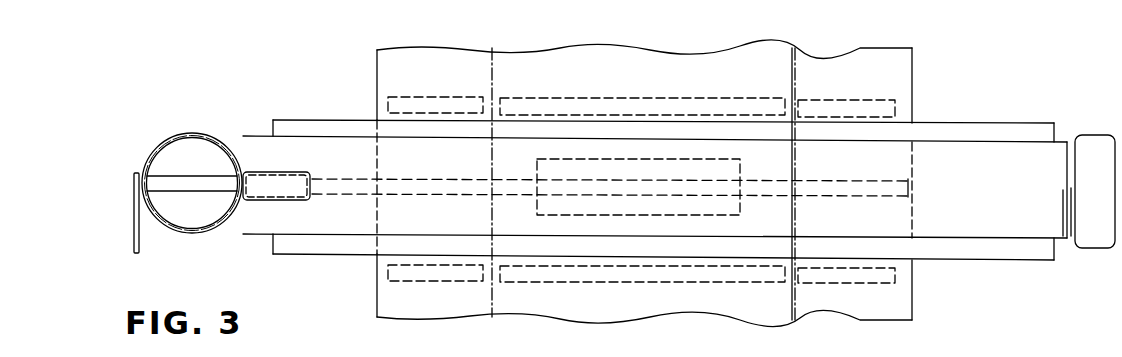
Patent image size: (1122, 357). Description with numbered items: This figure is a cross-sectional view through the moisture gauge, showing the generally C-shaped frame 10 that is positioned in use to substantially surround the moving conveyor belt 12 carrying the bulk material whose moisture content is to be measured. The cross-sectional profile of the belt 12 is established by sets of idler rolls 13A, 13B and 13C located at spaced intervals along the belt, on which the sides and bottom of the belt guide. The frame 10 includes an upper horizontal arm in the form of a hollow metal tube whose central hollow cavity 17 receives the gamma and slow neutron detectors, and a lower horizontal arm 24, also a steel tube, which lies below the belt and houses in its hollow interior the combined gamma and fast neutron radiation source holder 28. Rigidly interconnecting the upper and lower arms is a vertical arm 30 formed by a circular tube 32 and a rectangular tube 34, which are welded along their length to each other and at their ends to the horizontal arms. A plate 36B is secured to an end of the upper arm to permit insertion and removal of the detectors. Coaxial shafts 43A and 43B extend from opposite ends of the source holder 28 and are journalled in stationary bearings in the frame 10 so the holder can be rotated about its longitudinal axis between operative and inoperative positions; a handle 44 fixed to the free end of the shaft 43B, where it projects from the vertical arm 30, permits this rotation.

The C-shaped frame 10 is at (937, 356).
The conveyor belt 12 is at (914, 110).
The idler rolls 13A is at (870, 80).
The idler rolls 13B is at (442, 97).
The idler rolls 13C is at (656, 98).
The hollow cavity 17 is at (267, 350).
The lower horizontal arm 24 is at (1015, 158).
The source holder 28 is at (632, 162).
The vertical arm 30 is at (239, 213).
The circular tube 32 is at (172, 134).
The rectangular tube 34 is at (253, 172).
The plate 36B is at (21, 346).
The shaft 43A is at (895, 181).
The shaft 43B is at (190, 192).
The handle 44 is at (133, 215).